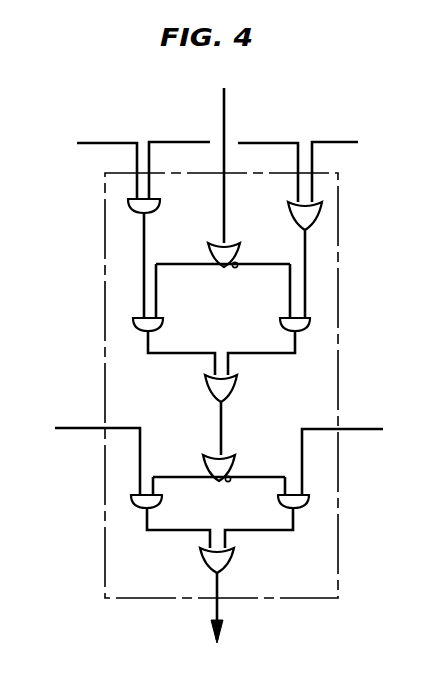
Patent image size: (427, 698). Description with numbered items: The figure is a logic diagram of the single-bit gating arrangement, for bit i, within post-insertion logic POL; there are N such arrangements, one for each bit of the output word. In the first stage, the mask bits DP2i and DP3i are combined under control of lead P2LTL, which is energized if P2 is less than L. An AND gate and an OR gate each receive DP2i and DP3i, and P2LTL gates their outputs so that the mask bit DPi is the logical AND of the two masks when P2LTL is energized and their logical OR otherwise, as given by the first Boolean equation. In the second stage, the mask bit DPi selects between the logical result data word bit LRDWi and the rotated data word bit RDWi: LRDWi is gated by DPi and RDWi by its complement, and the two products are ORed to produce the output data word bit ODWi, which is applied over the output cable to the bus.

The post-insertion logic POL is at (105, 267).
The bit i of mask DP2 DP2i is at (185, 160).
The bit i of mask DP3 DP3i is at (253, 160).
The lead P2LTL is at (229, 155).
The bit i of mask DP DPi is at (239, 428).
The bit i of logical result data word LRDWi is at (87, 448).
The bit i of rotated data word RDWi is at (343, 450).
The bit i of output data word ODWi is at (217, 622).